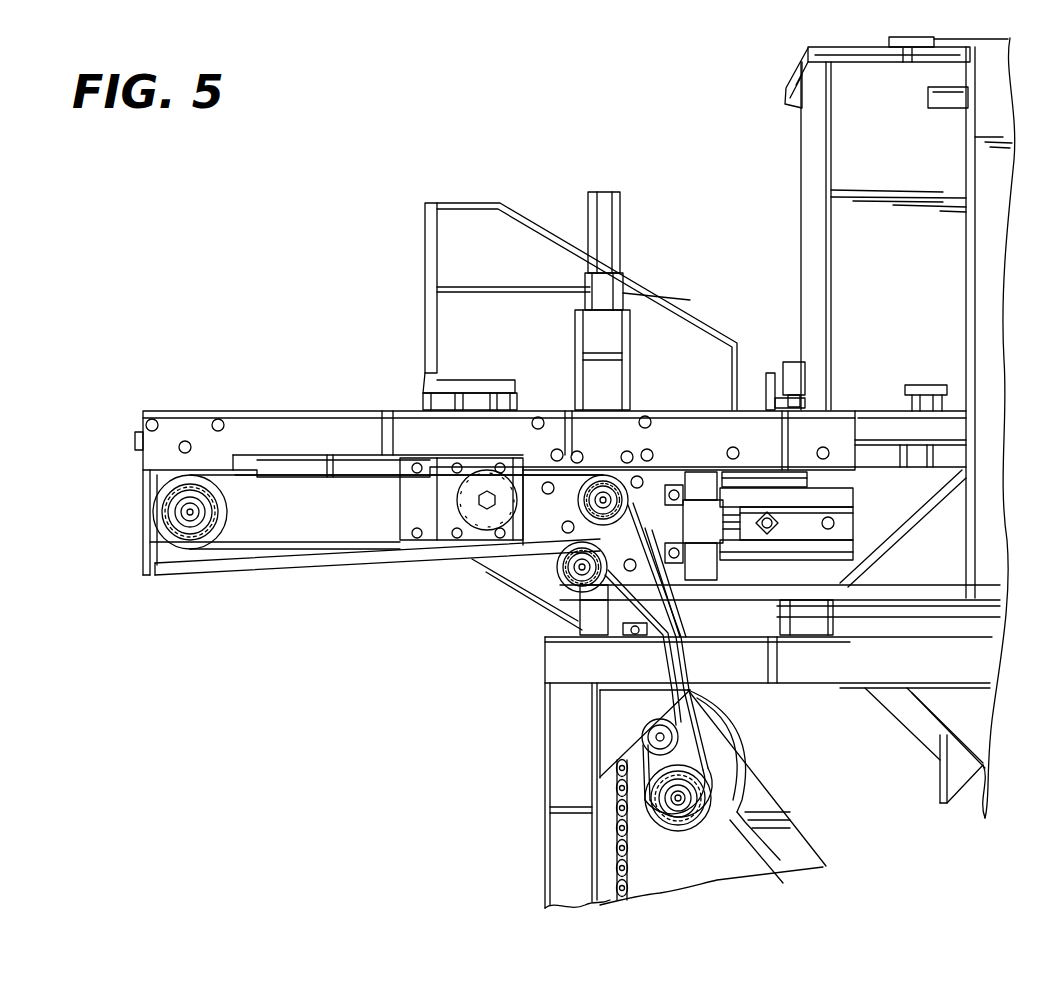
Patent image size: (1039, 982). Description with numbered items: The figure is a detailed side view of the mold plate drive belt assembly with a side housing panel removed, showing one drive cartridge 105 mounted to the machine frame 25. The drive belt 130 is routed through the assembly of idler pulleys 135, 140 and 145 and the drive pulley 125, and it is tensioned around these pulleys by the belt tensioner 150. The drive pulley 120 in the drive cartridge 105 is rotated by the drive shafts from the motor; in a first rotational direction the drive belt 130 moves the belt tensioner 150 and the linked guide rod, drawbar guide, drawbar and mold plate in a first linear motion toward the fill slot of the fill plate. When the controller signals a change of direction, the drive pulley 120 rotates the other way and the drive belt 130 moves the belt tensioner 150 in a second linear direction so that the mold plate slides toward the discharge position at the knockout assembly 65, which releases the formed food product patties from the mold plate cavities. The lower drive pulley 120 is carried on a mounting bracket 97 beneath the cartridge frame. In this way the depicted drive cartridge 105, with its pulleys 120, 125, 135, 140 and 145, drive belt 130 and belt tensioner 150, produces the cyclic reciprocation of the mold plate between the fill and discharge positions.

The frame 25 is at (824, 198).
The knockout assembly 65 is at (509, 243).
The mounting bracket 97 is at (776, 858).
The drive cartridge 105 is at (425, 700).
The drive pulley 120 is at (687, 797).
The drive pulley 125 is at (632, 826).
The drive belt 130 is at (275, 484).
The idler pulley 135 is at (565, 582).
The idler pulley 140 is at (168, 517).
The idler pulley 145 is at (600, 472).
The belt tensioner 150 is at (445, 542).